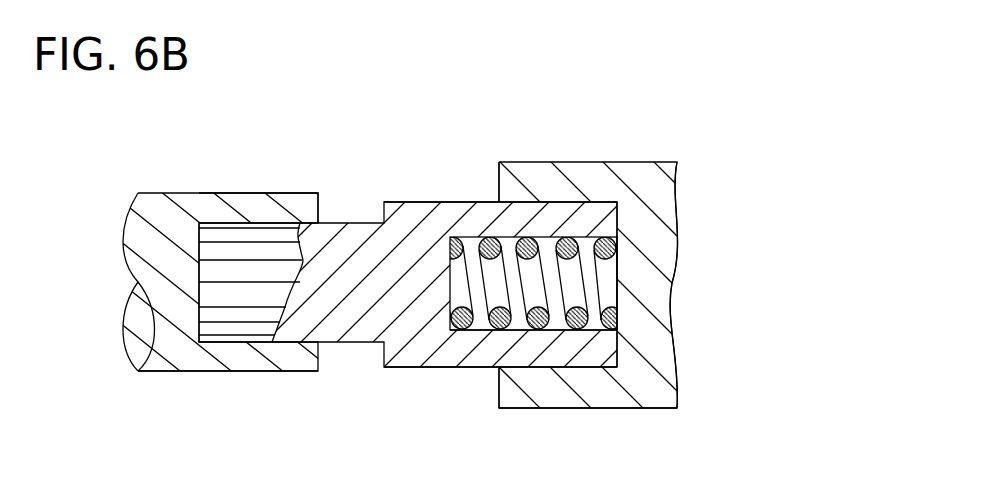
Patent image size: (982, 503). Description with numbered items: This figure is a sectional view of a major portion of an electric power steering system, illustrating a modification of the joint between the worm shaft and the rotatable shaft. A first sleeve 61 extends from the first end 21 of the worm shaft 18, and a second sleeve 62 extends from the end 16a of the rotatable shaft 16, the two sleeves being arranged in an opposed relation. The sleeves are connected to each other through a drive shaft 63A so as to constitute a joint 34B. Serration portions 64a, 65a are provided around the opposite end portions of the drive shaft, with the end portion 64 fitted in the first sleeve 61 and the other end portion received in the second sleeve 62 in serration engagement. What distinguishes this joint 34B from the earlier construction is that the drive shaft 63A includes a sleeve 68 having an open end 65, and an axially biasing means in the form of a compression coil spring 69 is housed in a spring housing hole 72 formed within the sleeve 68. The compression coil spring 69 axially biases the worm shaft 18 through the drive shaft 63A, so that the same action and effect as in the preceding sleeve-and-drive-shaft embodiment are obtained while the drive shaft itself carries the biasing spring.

The rotatable shaft 16 is at (649, 158).
The end of the rotatable shaft 16a is at (672, 258).
The worm shaft 18 is at (169, 191).
The first end of the worm shaft 21 is at (200, 362).
The joint 34B is at (359, 161).
The first sleeve 61 is at (293, 205).
The second sleeve 62 is at (593, 172).
The drive shaft 63A is at (398, 200).
The end portion of the drive shaft 64 is at (237, 233).
The serration portion 64a is at (248, 330).
The open end 65 is at (588, 353).
The serration portion 65a is at (540, 372).
The sleeve 68 is at (550, 205).
The compression coil spring 69 is at (492, 340).
The spring housing hole 72 is at (612, 305).